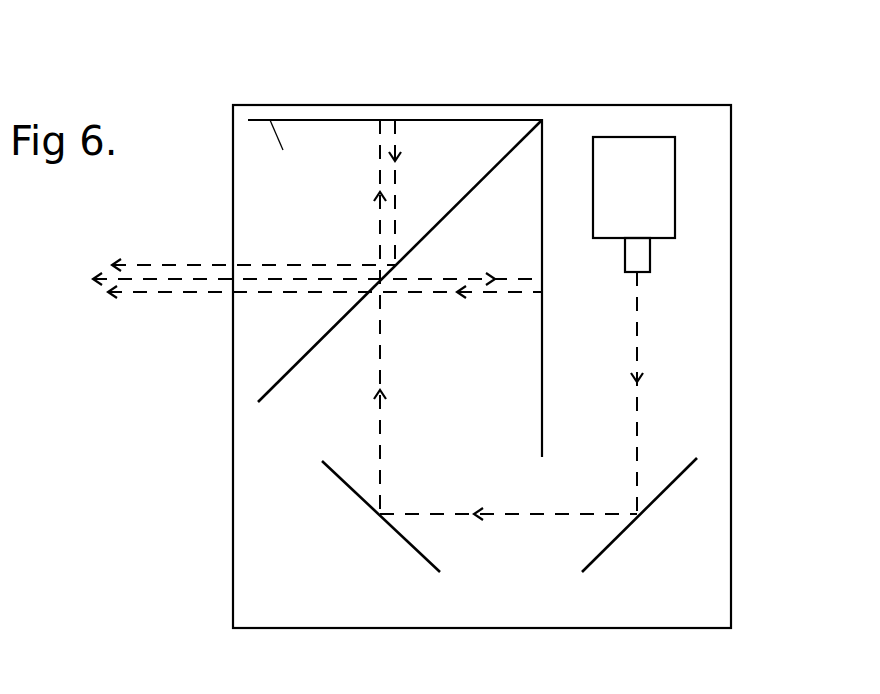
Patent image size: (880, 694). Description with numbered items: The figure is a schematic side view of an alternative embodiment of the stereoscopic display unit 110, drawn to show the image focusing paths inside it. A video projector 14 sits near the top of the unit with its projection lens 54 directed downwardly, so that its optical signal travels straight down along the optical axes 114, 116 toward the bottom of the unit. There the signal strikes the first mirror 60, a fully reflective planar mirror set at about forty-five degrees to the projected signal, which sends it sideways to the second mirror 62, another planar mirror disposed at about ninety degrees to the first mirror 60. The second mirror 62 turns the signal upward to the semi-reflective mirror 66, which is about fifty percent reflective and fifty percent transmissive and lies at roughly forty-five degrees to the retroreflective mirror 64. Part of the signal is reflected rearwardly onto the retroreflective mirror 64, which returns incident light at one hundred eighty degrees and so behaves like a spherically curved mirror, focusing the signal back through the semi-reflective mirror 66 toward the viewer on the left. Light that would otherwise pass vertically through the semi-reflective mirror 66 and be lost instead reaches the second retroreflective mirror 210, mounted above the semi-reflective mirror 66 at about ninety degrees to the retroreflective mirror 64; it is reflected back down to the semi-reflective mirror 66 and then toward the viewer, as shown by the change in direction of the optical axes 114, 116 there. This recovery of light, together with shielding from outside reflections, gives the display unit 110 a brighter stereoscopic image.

The display unit 110 is at (502, 78).
The video projector 14 is at (653, 180).
The projection lens 54 is at (640, 258).
The retroreflective mirror 64 is at (542, 202).
The semi-reflective mirror 66 is at (355, 261).
The second retroreflective mirror 210 is at (283, 150).
The optical axis 114 is at (743, 393).
The optical axis 116 is at (638, 346).
The second mirror 62 is at (397, 533).
The first mirror 60 is at (632, 523).